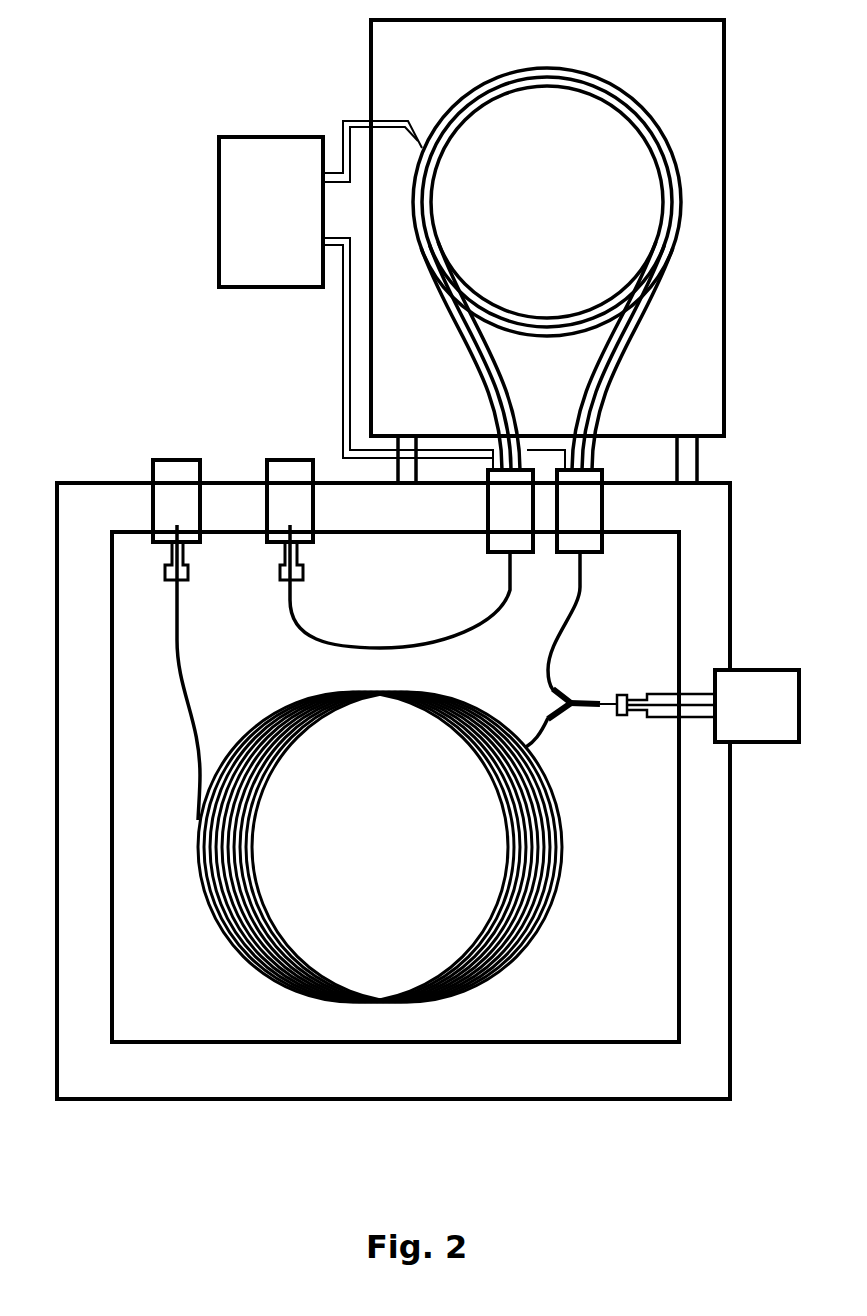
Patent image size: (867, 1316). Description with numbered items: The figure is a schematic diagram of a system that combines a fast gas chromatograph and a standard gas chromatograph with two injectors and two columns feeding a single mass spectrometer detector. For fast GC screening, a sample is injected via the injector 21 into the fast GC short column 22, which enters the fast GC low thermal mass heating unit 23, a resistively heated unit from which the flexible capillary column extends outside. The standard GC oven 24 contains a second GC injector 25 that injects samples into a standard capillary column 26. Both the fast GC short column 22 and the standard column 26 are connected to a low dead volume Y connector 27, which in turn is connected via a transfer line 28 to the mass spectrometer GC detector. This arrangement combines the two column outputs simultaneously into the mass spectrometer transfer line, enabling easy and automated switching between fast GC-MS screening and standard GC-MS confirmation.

The injector 21 is at (290, 458).
The fast GC short column 22 is at (351, 643).
The fast GC low thermal mass heating unit 23 is at (366, 80).
The standard GC oven 24 is at (90, 480).
The second GC injector 25 is at (177, 458).
The standard capillary column 26 is at (250, 845).
The low dead volume Y connector 27 is at (583, 712).
The transfer line 28 is at (755, 670).